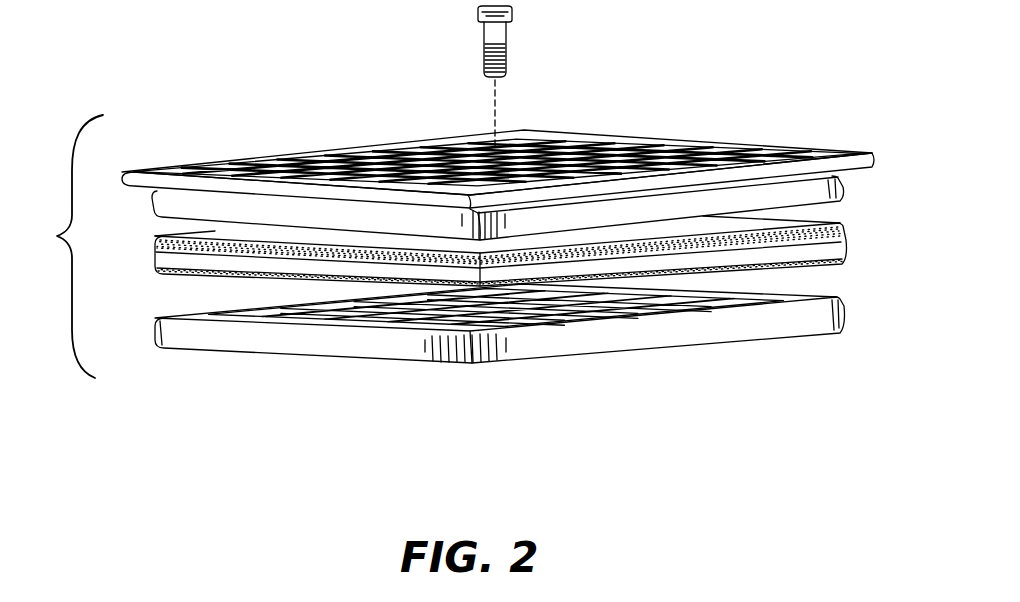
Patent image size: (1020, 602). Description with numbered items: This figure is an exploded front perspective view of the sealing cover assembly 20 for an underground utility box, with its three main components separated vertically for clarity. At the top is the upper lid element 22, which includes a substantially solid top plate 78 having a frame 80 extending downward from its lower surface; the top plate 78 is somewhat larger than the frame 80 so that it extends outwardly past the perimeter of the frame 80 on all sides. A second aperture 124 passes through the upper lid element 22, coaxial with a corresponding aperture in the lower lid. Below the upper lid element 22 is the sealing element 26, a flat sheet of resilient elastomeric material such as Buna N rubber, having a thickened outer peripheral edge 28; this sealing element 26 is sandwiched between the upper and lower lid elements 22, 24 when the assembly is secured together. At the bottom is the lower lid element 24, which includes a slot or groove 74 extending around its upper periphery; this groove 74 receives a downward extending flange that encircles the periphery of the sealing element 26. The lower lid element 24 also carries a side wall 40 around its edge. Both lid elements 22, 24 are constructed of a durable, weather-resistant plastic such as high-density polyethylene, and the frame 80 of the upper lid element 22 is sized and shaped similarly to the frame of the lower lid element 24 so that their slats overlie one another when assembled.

The sealing cover assembly 20 is at (624, 112).
The upper lid element 22 is at (498, 152).
The second aperture 124 is at (330, 177).
The top plate 78 is at (533, 167).
The frame 80 is at (845, 186).
The sealing element 26 is at (153, 253).
The thickened outer peripheral edge 28 is at (283, 262).
The slot or groove 74 is at (840, 302).
The side wall 40 is at (388, 347).
The lower lid element 24 is at (536, 357).